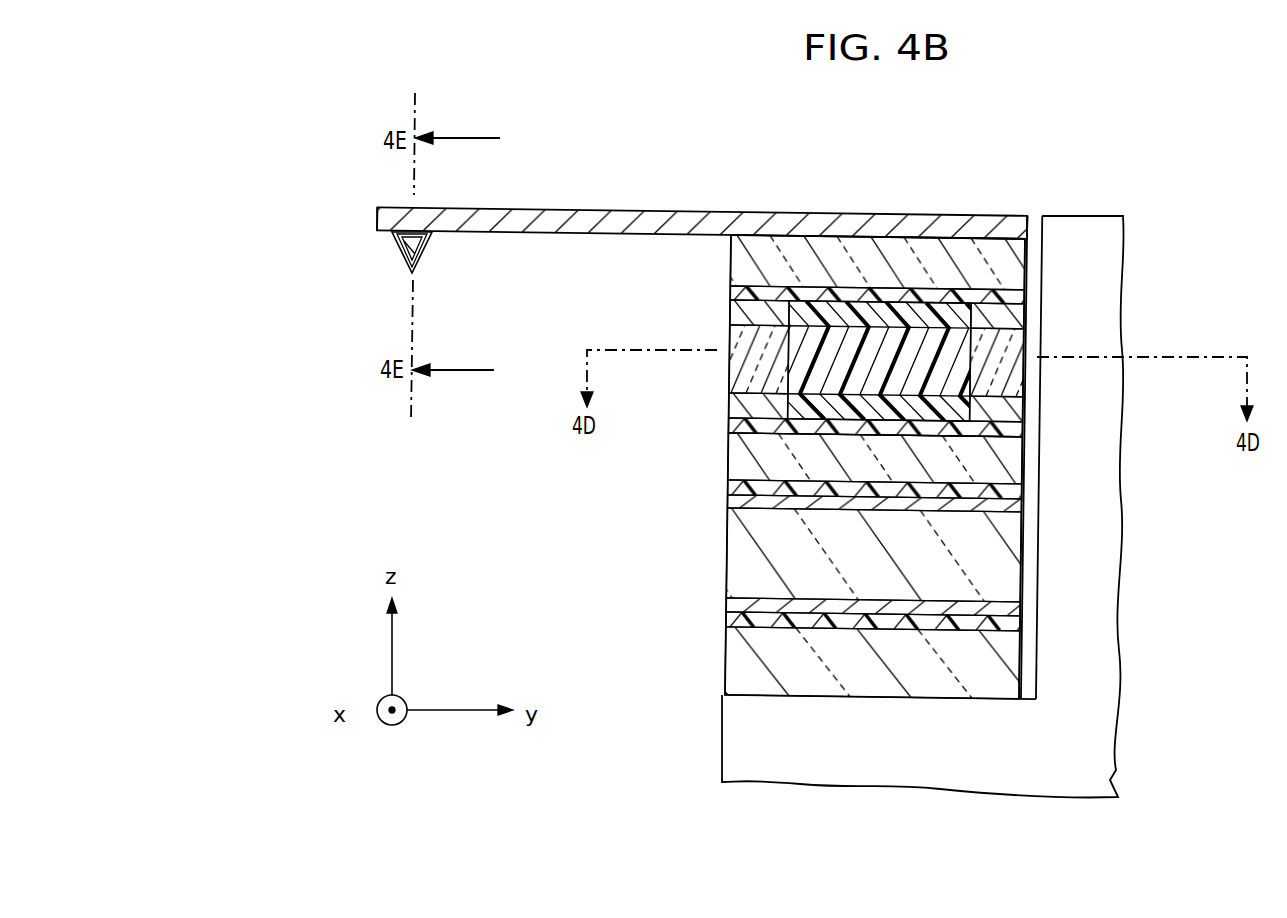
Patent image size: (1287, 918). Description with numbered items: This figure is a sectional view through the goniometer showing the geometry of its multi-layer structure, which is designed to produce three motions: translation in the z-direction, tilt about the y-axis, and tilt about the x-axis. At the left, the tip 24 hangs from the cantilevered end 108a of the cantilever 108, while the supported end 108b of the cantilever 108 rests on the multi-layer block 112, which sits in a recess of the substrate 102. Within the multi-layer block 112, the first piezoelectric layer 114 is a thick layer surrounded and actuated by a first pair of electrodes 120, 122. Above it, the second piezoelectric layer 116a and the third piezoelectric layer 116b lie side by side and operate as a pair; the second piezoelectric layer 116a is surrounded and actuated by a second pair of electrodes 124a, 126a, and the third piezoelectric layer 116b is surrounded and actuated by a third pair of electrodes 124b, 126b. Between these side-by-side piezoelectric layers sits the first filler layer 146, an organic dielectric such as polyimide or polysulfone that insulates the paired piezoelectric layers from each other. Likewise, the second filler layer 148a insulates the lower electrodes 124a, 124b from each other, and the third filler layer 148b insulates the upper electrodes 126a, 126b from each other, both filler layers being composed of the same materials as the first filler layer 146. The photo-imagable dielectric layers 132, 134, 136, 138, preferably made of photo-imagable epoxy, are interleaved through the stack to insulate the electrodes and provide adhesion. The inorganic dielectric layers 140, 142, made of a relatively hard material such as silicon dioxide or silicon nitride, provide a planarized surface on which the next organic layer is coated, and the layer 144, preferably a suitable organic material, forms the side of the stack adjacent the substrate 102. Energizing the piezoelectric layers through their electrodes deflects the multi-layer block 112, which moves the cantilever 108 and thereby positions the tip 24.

The tip 24 is at (400, 250).
The substrate 102 is at (868, 773).
The cantilever 108 is at (585, 208).
The cantilevered end 108a is at (342, 206).
The supported end 108b is at (777, 218).
The multi-layer block 112 is at (680, 565).
The first piezoelectric layer 114 is at (1003, 567).
The second piezoelectric layer 116a is at (742, 343).
The third piezoelectric layer 116b is at (1015, 350).
The electrode 120 is at (1012, 608).
The electrode 122 is at (1015, 505).
The electrode 124a is at (742, 400).
The electrode 124b is at (1010, 407).
The electrode 126a is at (733, 310).
The electrode 126b is at (1017, 313).
The photo-imagable dielectric layer 132 is at (728, 623).
The photo-imagable dielectric layer 134 is at (735, 487).
The photo-imagable dielectric layer 136 is at (1013, 428).
The photo-imagable dielectric layer 138 is at (1016, 292).
The inorganic dielectric layer 140 is at (1010, 652).
The inorganic dielectric layer 142 is at (993, 462).
The dielectric layer 144 is at (1017, 253).
The first filler layer 146 is at (808, 358).
The second filler layer 148a is at (793, 435).
The third filler layer 148b is at (900, 310).